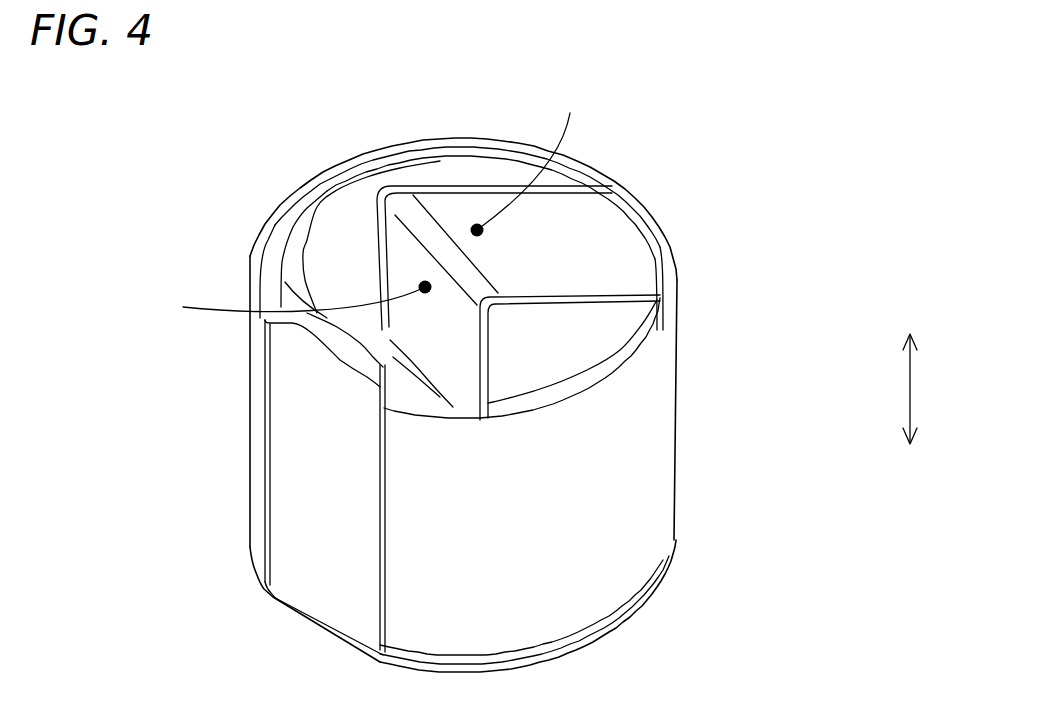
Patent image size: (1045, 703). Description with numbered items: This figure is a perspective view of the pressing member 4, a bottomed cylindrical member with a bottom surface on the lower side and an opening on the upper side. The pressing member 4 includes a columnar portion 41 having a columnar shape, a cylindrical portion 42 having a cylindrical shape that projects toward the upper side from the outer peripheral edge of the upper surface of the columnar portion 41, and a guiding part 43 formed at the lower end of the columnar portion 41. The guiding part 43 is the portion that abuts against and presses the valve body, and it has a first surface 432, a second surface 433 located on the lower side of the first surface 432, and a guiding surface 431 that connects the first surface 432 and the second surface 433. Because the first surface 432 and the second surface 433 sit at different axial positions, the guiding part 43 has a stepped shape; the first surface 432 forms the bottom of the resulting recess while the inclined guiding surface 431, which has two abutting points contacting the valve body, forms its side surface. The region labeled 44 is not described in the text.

The pressing member 4 is at (126, 111).
The columnar portion 41 is at (640, 437).
The cylindrical portion 42 is at (657, 523).
The guiding part 43 is at (253, 250).
The second surface 433 is at (463, 160).
The guiding surface 431 is at (538, 262).
The first surface 432 is at (593, 342).
The flat side face 44 is at (295, 440).